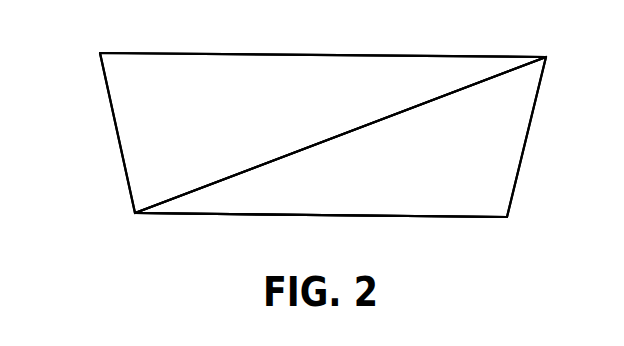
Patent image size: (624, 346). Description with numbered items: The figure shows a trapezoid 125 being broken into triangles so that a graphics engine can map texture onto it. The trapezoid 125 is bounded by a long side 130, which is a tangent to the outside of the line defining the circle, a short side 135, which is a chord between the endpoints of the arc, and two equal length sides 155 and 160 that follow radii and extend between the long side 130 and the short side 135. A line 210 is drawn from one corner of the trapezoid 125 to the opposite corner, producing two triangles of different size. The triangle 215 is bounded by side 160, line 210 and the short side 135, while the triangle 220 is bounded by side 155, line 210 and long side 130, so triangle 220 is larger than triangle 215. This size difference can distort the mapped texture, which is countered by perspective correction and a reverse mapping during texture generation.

The triangle 220 is at (197, 67).
The triangle 215 is at (488, 188).
The long side 130 is at (322, 54).
The line 210 is at (336, 133).
The side 155 is at (116, 132).
The side 160 is at (528, 134).
The trapezoid 125 is at (423, 217).
The short side 135 is at (320, 216).